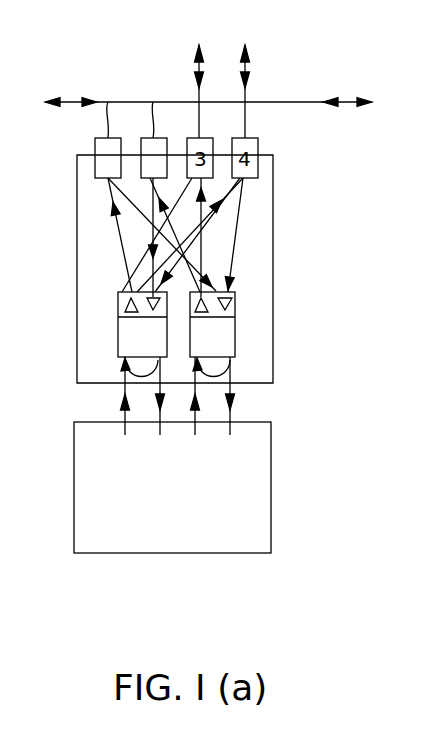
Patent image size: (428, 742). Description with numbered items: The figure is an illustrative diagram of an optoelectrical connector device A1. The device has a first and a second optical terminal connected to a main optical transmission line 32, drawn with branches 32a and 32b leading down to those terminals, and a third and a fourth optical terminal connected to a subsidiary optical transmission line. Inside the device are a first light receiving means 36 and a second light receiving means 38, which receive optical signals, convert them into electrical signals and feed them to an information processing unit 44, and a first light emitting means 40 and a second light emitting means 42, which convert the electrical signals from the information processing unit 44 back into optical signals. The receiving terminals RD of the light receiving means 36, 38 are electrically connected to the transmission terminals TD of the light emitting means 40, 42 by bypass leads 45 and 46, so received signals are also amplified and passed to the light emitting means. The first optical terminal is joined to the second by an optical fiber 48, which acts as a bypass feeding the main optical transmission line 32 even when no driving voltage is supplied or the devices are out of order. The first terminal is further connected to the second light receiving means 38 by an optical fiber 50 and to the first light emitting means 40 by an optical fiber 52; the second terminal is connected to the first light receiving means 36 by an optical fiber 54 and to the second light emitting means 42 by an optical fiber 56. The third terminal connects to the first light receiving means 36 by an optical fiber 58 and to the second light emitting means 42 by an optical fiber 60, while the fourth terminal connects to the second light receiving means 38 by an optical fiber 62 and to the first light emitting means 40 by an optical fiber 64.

The main optical transmission line 32 is at (75, 101).
The line branch 32a is at (106, 101).
The line branch 32b is at (151, 101).
The optical fiber 54 is at (210, 64).
The optoelectrical connector device A1 is at (320, 178).
The optical fiber 48 is at (148, 180).
The optical fiber 50 is at (168, 203).
The optical fiber 52 is at (200, 208).
The optical fiber 56 is at (185, 233).
The optical fiber 58 is at (188, 268).
The optical fiber 60 is at (175, 248).
The optical fiber 62 is at (238, 207).
The optical fiber 64 is at (205, 218).
The first light receiving means 36 is at (143, 310).
The first light emitting means 40 is at (120, 304).
The bypass lead 45 is at (127, 375).
The second light emitting means 42 is at (222, 313).
The second light receiving means 38 is at (232, 303).
The bypass lead 46 is at (230, 376).
The information processing unit 44 is at (271, 520).